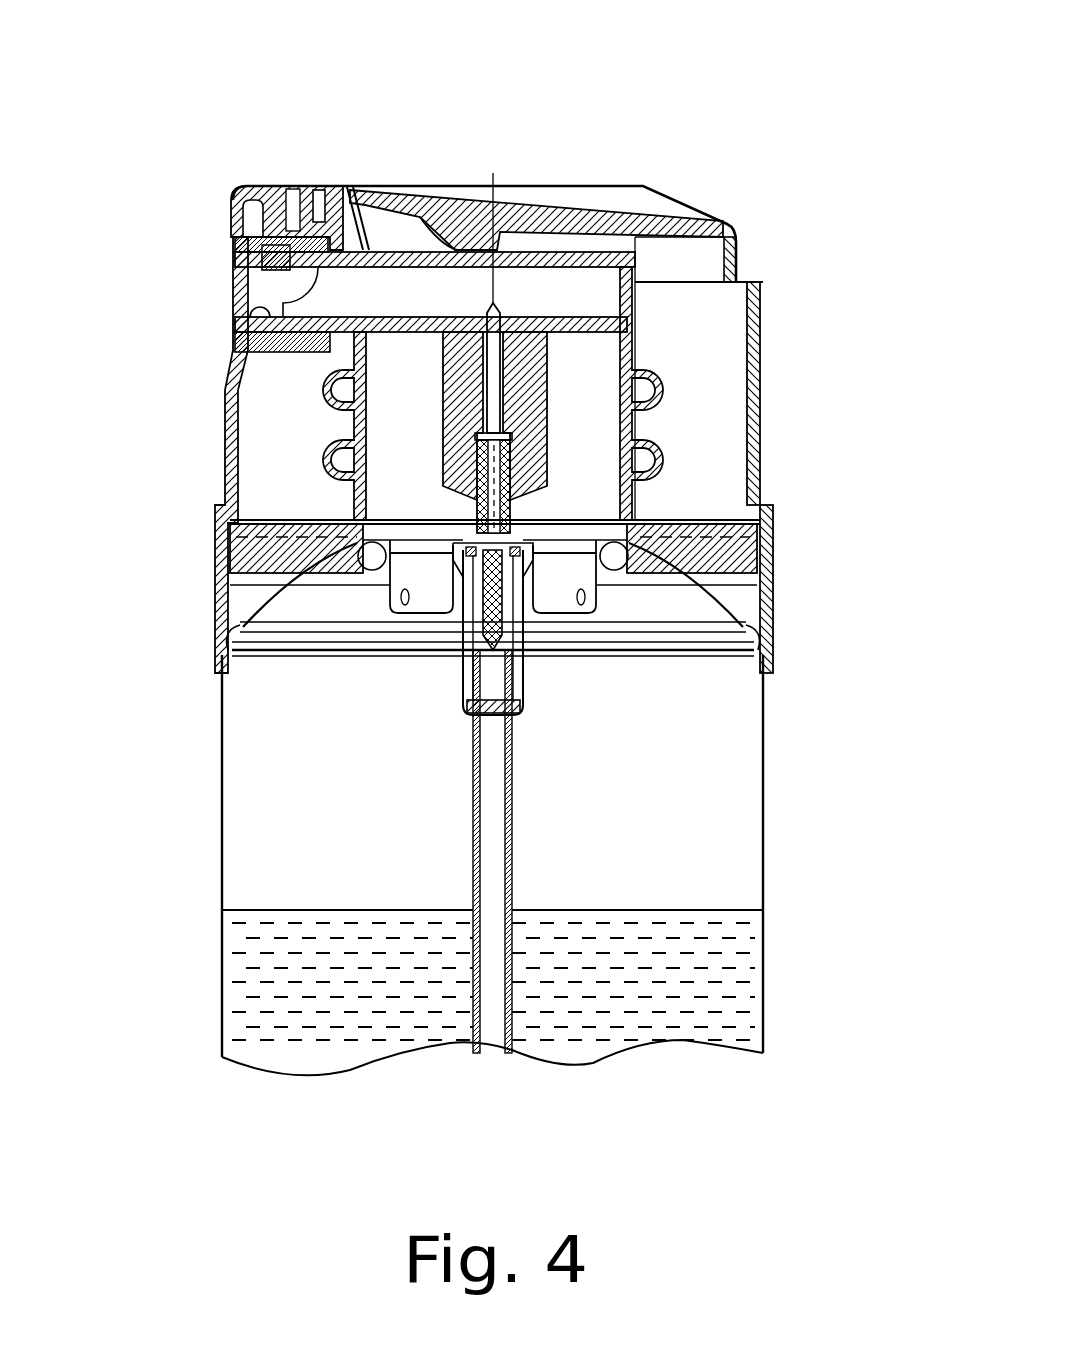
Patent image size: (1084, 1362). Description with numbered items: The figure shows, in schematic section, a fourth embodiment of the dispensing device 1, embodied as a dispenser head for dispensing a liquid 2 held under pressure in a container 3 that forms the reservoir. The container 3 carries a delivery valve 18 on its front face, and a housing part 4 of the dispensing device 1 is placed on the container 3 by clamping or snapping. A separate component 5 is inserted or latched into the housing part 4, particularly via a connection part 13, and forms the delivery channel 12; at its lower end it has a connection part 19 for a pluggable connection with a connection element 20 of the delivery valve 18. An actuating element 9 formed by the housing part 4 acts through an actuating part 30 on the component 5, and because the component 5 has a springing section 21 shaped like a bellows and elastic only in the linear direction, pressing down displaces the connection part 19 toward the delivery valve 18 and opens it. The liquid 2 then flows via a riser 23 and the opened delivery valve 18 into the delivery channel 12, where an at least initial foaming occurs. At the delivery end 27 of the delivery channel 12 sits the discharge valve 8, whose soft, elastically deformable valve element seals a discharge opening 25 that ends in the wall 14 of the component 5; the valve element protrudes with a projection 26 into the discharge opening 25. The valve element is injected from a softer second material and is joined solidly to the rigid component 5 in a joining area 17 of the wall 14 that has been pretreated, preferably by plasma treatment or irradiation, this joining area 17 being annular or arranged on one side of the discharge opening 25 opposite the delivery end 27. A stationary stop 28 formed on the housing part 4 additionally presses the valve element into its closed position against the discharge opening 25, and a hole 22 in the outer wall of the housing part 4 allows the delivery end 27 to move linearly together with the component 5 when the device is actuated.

The dispensing device 1 is at (773, 183).
The liquid 2 is at (258, 993).
The container 3 is at (222, 848).
The housing part 4 is at (762, 363).
The component 5 is at (705, 512).
The discharge valve 8 is at (293, 205).
The actuating element 9 is at (537, 235).
The delivery channel 12 is at (233, 312).
The connection part 13 is at (768, 553).
The wall 14 is at (365, 250).
The joining area 17 is at (233, 325).
The delivery valve 18 is at (445, 709).
The connection part 19 is at (500, 490).
The connection element 20 is at (245, 578).
The springing section 21 is at (663, 455).
The hole 22 is at (228, 375).
The riser 23 is at (505, 820).
The discharge opening 25 is at (232, 262).
The projection 26 is at (233, 278).
The delivery end 27 is at (233, 338).
The stop 28 is at (232, 213).
The actuating part 30 is at (470, 250).